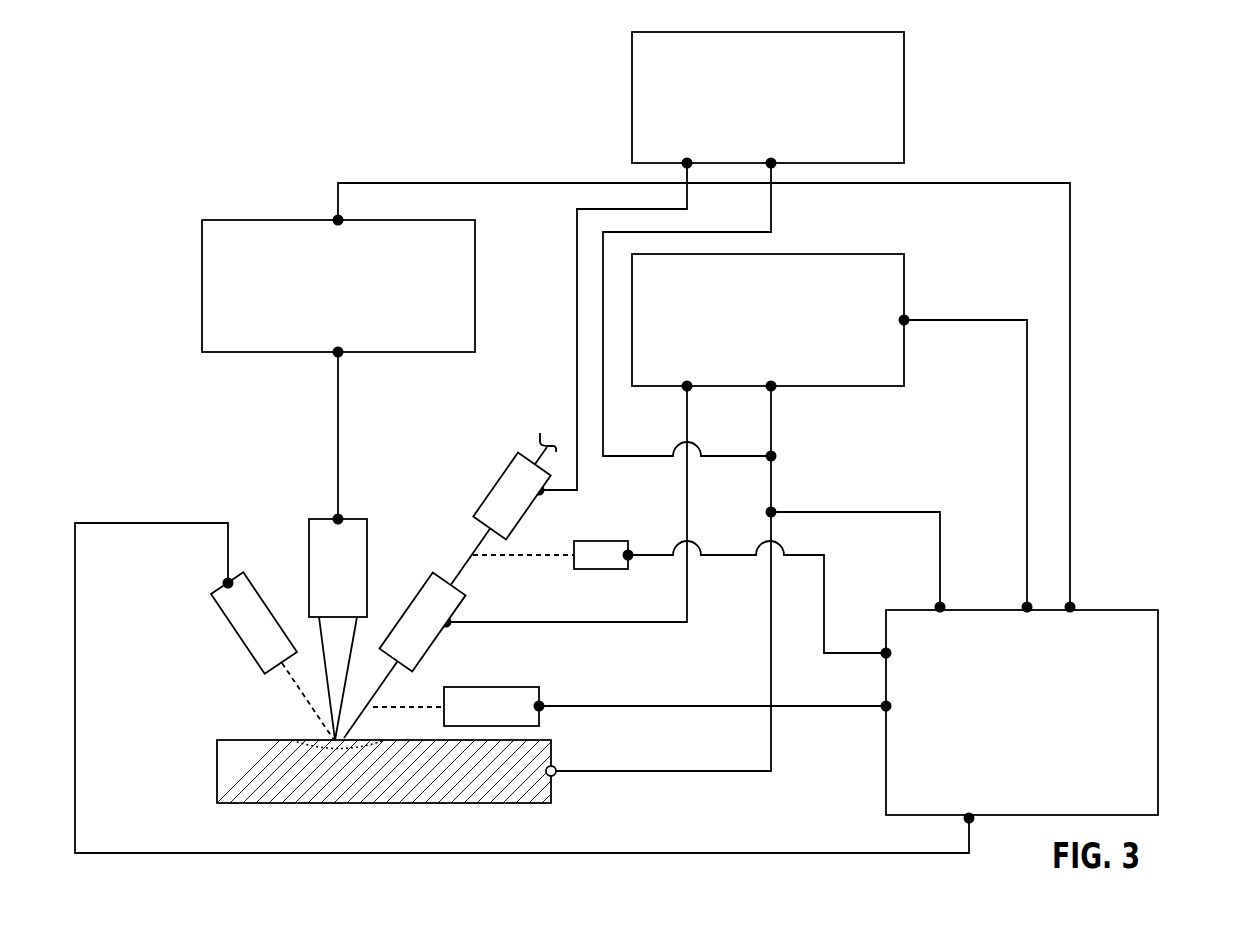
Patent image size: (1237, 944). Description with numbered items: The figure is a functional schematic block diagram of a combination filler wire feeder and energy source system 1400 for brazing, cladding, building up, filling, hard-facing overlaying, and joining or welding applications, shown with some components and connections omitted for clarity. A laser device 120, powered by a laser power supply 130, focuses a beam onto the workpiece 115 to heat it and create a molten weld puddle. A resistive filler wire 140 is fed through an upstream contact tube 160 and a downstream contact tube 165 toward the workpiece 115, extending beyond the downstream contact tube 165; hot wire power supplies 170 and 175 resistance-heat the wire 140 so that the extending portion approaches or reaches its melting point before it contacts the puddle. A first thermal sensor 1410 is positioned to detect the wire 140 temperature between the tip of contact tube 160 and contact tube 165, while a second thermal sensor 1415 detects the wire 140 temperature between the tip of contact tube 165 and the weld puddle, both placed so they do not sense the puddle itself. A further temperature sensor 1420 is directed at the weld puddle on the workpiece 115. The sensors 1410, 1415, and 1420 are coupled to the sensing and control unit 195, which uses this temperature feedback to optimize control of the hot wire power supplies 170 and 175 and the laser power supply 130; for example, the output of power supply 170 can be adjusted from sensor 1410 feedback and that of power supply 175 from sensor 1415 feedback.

The workpiece 115 is at (551, 792).
The laser device 120 is at (367, 537).
The laser power supply 130 is at (475, 250).
The resistive filler wire 140 is at (375, 688).
The upstream contact tube 160 is at (498, 482).
The downstream contact tube 165 is at (455, 605).
The hot wire power supply 170 is at (904, 110).
The hot wire power supply 175 is at (904, 273).
The sensing and control unit 195 is at (1112, 610).
The system 1400 is at (1108, 167).
The thermal sensor 1410 is at (595, 541).
The thermal sensor 1415 is at (506, 687).
The temperature sensor 1420 is at (232, 623).